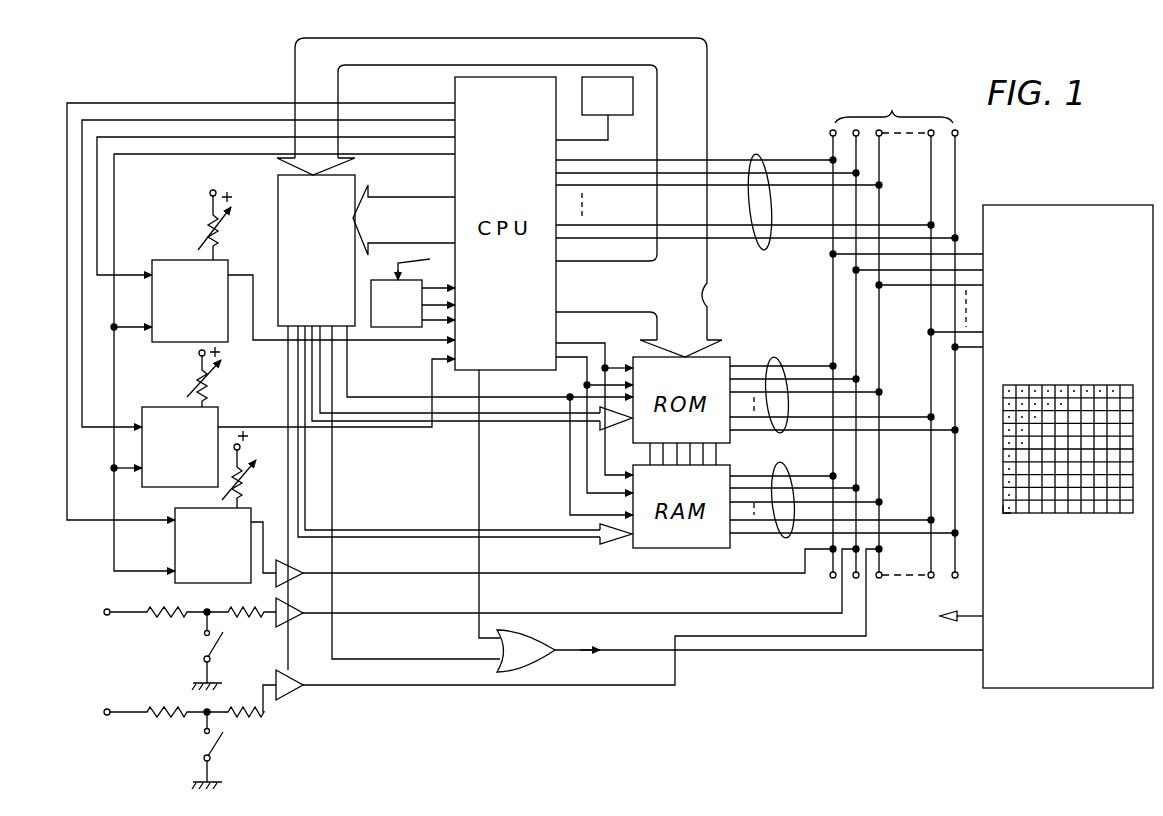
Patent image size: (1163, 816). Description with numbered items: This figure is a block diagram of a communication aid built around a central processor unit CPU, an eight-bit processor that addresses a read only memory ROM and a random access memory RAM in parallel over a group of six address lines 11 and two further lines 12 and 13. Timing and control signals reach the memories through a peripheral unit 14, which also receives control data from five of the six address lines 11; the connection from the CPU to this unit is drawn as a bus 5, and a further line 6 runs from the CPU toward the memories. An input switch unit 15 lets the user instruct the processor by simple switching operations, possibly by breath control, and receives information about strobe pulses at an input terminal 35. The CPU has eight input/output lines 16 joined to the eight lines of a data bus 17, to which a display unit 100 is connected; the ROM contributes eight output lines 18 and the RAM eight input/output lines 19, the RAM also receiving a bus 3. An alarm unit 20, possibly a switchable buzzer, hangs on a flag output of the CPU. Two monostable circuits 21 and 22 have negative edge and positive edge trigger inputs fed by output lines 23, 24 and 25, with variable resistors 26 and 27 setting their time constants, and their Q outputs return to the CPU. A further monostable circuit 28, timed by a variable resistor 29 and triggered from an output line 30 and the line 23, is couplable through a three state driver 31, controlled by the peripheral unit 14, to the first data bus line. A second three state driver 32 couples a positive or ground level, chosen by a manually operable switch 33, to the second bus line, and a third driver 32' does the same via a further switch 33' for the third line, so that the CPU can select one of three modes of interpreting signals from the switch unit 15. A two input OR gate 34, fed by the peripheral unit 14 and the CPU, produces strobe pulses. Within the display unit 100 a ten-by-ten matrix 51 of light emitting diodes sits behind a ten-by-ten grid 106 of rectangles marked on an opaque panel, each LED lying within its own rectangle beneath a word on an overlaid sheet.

The bus line to RAM 3 is at (528, 548).
The bus line CPU to peripheral unit 5 is at (350, 82).
The line from CPU 6 is at (587, 322).
The group of six address output lines 11 is at (711, 303).
The further address line 12 is at (590, 343).
The further address line 13 is at (574, 360).
The peripheral unit 14 is at (439, 422).
The input switch unit 15 is at (413, 303).
The input/output lines 16 is at (767, 158).
The data bus 17 is at (906, 330).
The output lines 18 is at (778, 358).
The input/output lines 19 is at (781, 538).
The alarm unit 20 is at (594, 108).
The monostable circuit 21 is at (178, 260).
The monostable circuit 22 is at (175, 407).
The output line 23 is at (183, 155).
The output line 24 is at (258, 138).
The output line 25 is at (252, 120).
The variable resistor 26 is at (203, 222).
The variable resistor 27 is at (197, 370).
The further monostable circuit 28 is at (175, 542).
The variable resistor 29 is at (243, 458).
The output line 30 is at (169, 103).
The three state driver 31 is at (297, 562).
The three state driver 32 is at (481, 586).
The third three state driver 32' is at (493, 631).
The manually operable switch 33 is at (186, 652).
The further manually operable switch 33' is at (190, 752).
The two input OR gate 34 is at (545, 638).
The input terminal 35 is at (955, 612).
The matrix of light emitting diodes 51 is at (1054, 383).
The display unit 100 is at (1060, 203).
The grid of rectangles 106 is at (1008, 513).